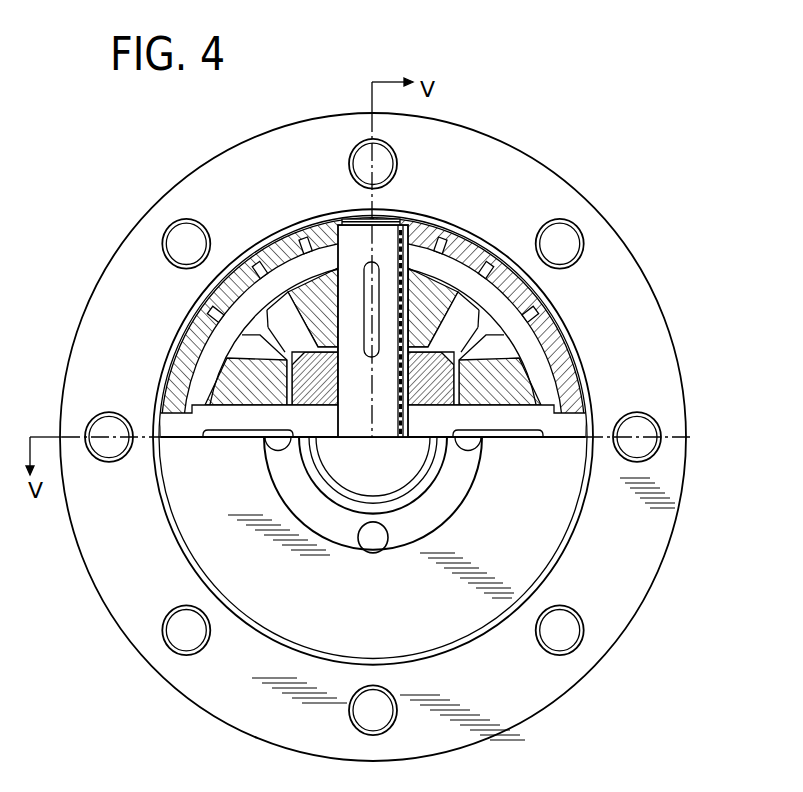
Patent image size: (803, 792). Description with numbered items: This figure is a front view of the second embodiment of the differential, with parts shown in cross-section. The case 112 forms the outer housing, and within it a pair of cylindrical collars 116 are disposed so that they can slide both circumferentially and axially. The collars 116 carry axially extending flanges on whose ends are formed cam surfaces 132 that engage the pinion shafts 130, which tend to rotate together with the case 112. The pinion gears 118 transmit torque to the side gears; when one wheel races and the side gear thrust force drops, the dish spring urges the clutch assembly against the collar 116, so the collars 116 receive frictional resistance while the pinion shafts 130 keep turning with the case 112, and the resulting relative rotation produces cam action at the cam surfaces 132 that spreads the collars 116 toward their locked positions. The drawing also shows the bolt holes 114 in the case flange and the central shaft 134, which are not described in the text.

The case 112 is at (208, 170).
The bolt holes 114 is at (575, 243).
The cylindrical collar 116 is at (532, 343).
The pinion gear 118 is at (438, 295).
The pinion shaft 130 is at (388, 245).
The cam surface 132 is at (322, 258).
The shaft 134 is at (336, 398).